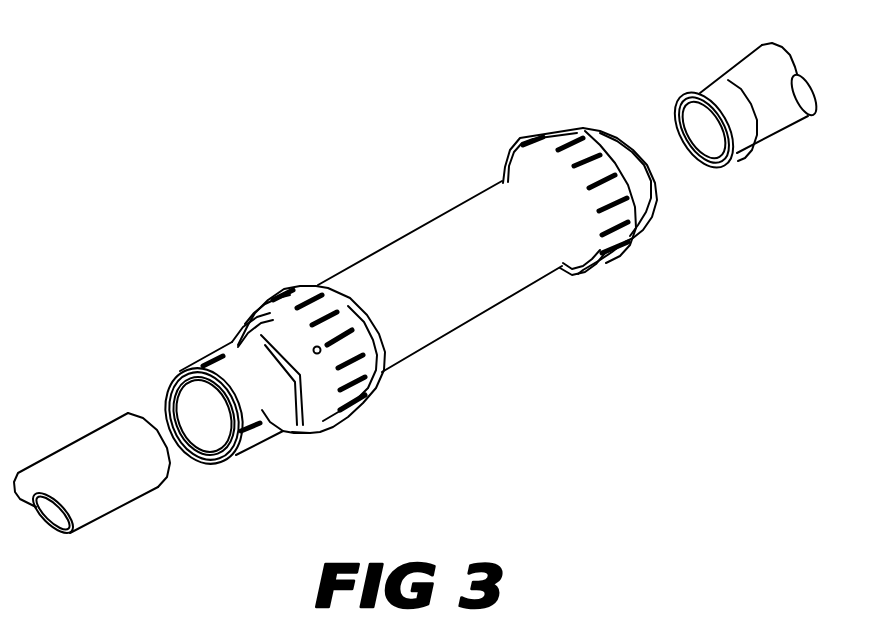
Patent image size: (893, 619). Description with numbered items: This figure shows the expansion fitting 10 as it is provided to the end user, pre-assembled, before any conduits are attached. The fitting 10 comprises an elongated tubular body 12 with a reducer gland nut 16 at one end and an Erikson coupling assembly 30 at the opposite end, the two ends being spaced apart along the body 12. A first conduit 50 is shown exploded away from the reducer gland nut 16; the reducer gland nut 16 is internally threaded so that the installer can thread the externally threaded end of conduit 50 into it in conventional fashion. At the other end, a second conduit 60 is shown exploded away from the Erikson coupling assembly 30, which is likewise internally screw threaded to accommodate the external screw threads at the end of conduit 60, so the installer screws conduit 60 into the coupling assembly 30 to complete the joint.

The expansion fitting 10 is at (186, 169).
The tubular body 12 is at (464, 309).
The reducer gland nut 16 is at (568, 135).
The Erikson coupling assembly 30 is at (265, 312).
The conduit 50 is at (747, 130).
The conduit 60 is at (128, 478).